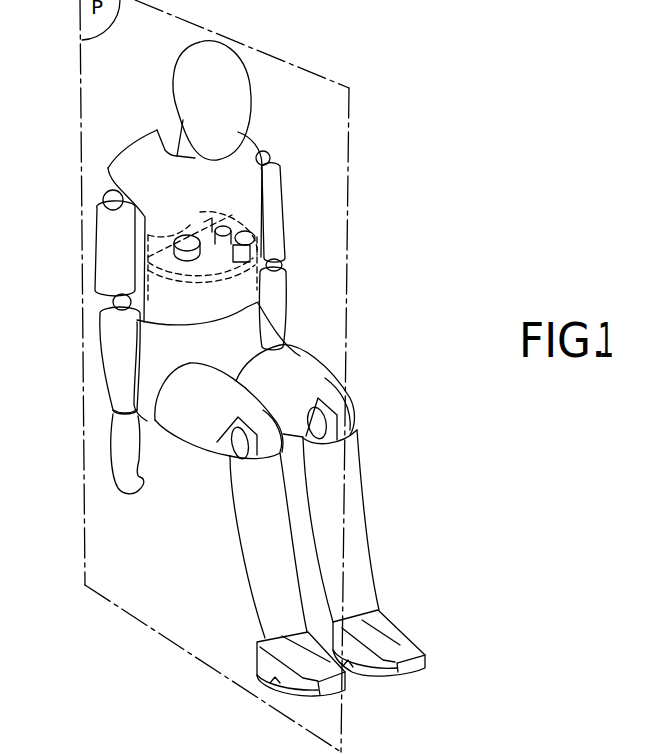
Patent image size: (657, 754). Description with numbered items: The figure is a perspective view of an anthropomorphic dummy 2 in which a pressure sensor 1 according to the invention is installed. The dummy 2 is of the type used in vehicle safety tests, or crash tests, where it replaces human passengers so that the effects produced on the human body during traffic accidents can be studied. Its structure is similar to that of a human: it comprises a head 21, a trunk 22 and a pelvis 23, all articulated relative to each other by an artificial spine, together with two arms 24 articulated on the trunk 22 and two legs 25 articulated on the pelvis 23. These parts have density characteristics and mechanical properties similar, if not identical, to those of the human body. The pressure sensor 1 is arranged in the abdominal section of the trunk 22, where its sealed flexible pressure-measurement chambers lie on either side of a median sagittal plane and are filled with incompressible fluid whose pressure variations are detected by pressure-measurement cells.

The pressure sensor 1 is at (155, 298).
The anthropomorphic dummy 2 is at (363, 336).
The head 21 is at (177, 72).
The trunk 22 is at (135, 158).
The pelvis 23 is at (247, 325).
The arms 24 is at (108, 243).
The legs 25 is at (243, 512).